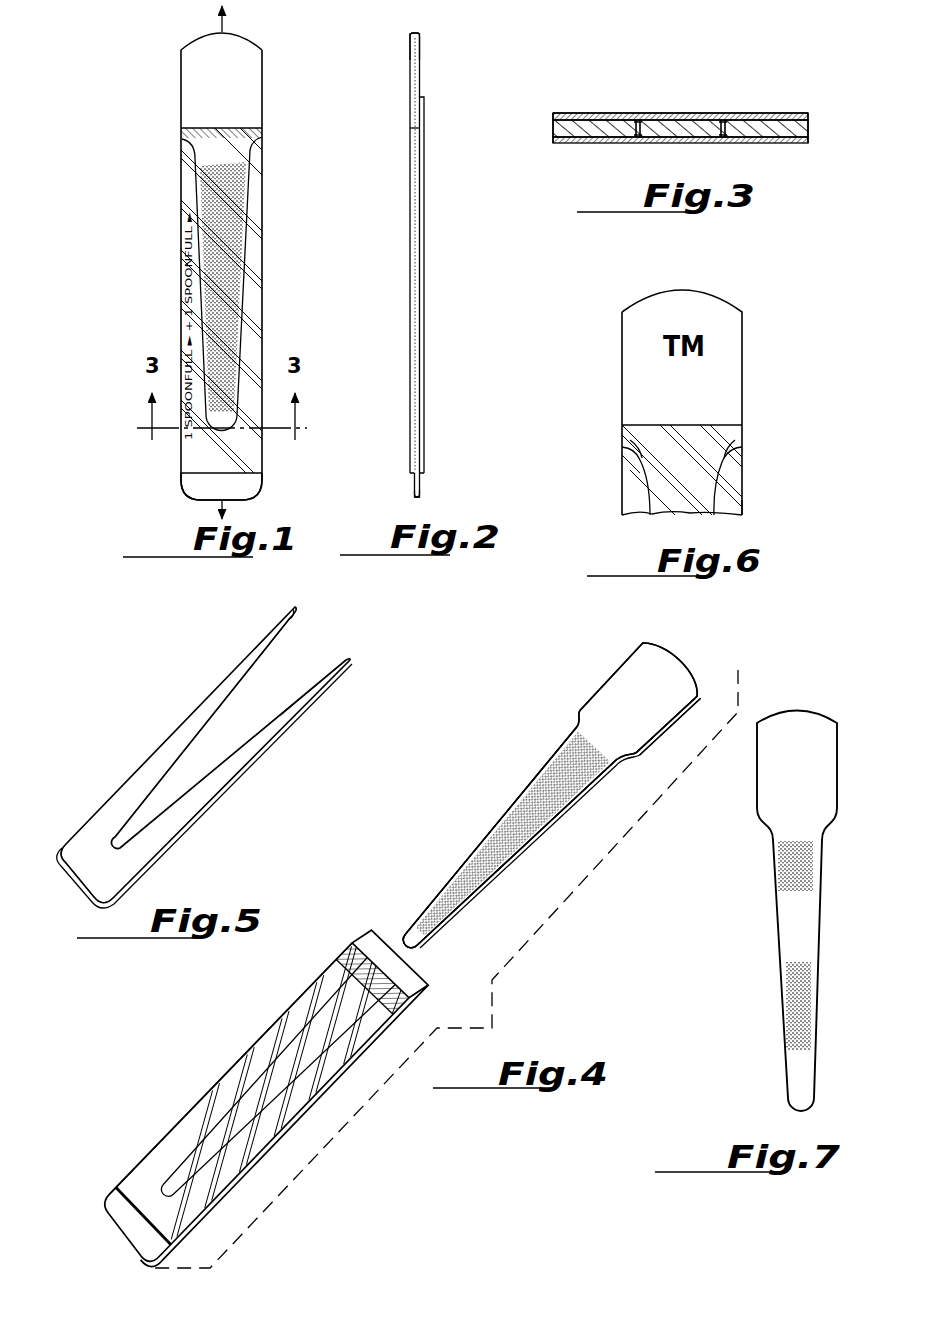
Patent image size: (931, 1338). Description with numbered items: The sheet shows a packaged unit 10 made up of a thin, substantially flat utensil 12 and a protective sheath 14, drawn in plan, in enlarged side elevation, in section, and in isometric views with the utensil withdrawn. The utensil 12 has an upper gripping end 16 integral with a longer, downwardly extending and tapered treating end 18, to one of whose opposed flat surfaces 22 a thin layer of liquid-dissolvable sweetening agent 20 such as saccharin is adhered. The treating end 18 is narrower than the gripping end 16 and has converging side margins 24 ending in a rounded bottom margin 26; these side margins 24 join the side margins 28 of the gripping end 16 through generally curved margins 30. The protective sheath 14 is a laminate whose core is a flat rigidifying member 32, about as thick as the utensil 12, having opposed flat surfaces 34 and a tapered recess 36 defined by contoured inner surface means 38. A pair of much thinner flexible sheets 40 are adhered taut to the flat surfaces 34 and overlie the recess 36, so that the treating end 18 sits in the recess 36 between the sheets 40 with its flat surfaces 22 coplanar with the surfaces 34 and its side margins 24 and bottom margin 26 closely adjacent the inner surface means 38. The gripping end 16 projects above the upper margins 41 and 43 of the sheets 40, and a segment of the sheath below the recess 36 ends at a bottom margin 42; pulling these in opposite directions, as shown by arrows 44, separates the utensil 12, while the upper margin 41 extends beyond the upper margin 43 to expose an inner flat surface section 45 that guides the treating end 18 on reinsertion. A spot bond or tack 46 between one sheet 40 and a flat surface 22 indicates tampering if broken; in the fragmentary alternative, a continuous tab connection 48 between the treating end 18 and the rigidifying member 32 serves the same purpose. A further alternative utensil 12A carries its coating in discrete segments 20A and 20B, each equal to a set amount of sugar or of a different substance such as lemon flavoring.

In FIG. 1, the packaged unit 10 is at (270, 170).
In FIG. 2, the packaged unit 10 is at (428, 93).
In FIG. 4, the packaged unit 10 is at (378, 860).
In FIG. 2, the utensil 12 is at (422, 33).
In FIG. 4, the utensil 12 is at (643, 640).
In FIG. 7, the utensil 12A is at (802, 703).
In FIG. 2, the protective sheath 14 is at (428, 494).
In FIG. 4, the protective sheath 14 is at (356, 936).
In FIG. 1, the upper gripping end 16 is at (262, 49).
In FIG. 2, the upper gripping end 16 is at (410, 50).
In FIG. 4, the upper gripping end 16 is at (612, 672).
In FIG. 6, the treating end 18 is at (732, 487).
In FIG. 4, the treating end 18 is at (462, 860).
In FIG. 4, the liquid-dissolvable sweetening agent 20 is at (527, 808).
In FIG. 7, the segment 20A is at (797, 864).
In FIG. 7, the segment 20B is at (797, 995).
In FIG. 3, the flat surfaces 22 is at (670, 118).
In FIG. 4, the flat surfaces 22 is at (562, 800).
In FIG. 3, the side margins 24 is at (637, 119).
In FIG. 4, the side margins 24 is at (432, 892).
In FIG. 4, the bottom margin 26 is at (412, 950).
In FIG. 4, the side margins 28 is at (594, 685).
In FIG. 4, the curved margins 30 is at (580, 712).
In FIG. 2, the flat rigidifying member 32 is at (416, 498).
In FIG. 3, the flat rigidifying member 32 is at (810, 125).
In FIG. 6, the flat rigidifying member 32 is at (742, 515).
In FIG. 5, the flat rigidifying member 32 is at (292, 605).
In FIG. 3, the flat surfaces 34 is at (787, 115).
In FIG. 5, the flat surfaces 34 is at (260, 738).
In FIG. 3, the tapered recess 36 is at (640, 140).
In FIG. 5, the tapered recess 36 is at (290, 660).
In FIG. 3, the inner surface means 38 is at (718, 140).
In FIG. 5, the inner surface means 38 is at (210, 727).
In FIG. 1, the flexible sheets 40 is at (261, 477).
In FIG. 2, the flexible sheets 40 is at (410, 474).
In FIG. 3, the flexible sheets 40 is at (555, 116).
In FIG. 2, the upper margin 41 is at (424, 98).
In FIG. 4, the upper margin 41 is at (475, 1001).
In FIG. 1, the bottom margin 42 is at (232, 504).
In FIG. 2, the bottom margin 42 is at (420, 501).
In FIG. 5, the bottom margin 42 is at (72, 883).
In FIG. 4, the bottom margin 42 is at (122, 1238).
In FIG. 1, the upper margin 43 is at (194, 128).
In FIG. 2, the upper margin 43 is at (412, 128).
In FIG. 4, the upper margin 43 is at (352, 936).
In FIG. 1, the arrows 44 is at (222, 30).
In FIG. 4, the exposed inner flat surface section 45 is at (380, 950).
In FIG. 1, the tack 46 is at (233, 131).
In FIG. 6, the continuous tab connection 48 is at (640, 458).